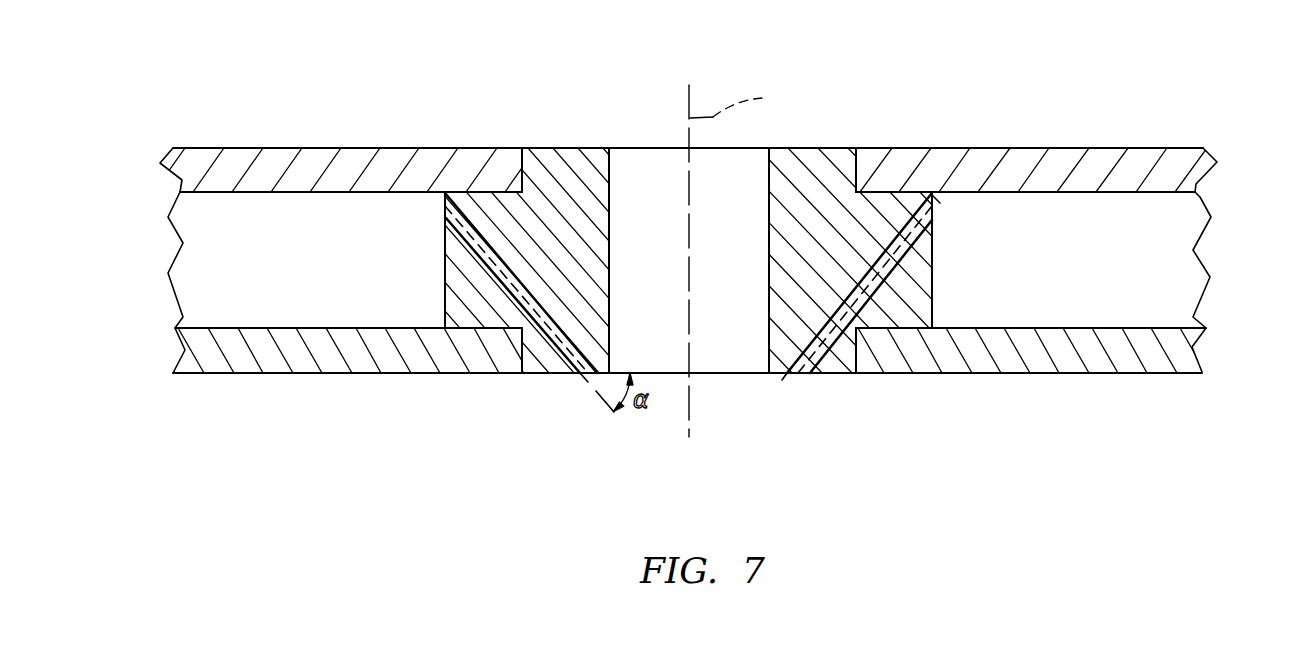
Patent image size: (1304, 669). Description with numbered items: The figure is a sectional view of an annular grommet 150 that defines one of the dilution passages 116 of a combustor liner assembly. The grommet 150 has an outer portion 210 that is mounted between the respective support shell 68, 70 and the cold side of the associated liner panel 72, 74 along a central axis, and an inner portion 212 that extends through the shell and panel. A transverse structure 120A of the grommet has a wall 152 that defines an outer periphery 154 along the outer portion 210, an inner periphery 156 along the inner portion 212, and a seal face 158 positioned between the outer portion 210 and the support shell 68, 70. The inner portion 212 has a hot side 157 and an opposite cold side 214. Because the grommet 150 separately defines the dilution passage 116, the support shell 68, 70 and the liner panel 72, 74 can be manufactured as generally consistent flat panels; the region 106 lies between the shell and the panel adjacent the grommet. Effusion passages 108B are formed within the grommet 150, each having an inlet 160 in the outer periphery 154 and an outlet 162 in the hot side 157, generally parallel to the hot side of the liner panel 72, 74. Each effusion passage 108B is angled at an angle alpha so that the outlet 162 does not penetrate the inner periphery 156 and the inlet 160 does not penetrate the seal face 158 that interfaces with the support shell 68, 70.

The support shell 68 is at (1033, 216).
The support shell 70 is at (1118, 160).
The liner panel 72 is at (1059, 327).
The liner panel 74 is at (1168, 349).
The cavity 106 is at (212, 247).
The effusion passage 108B is at (540, 305).
The dilution passage 116 is at (646, 112).
The transverse structure 120A is at (955, 253).
The annular grommet 150 is at (850, 254).
The wall 152 is at (898, 298).
The outer periphery 154 is at (932, 290).
The inner periphery 156 is at (769, 290).
The hot side 157 is at (828, 373).
The seal face 158 is at (913, 192).
The inlet 160 is at (445, 217).
The outlet 162 is at (572, 375).
The outer portion 210 is at (526, 266).
The inner portion 212 is at (573, 180).
The cold side 214 is at (805, 148).